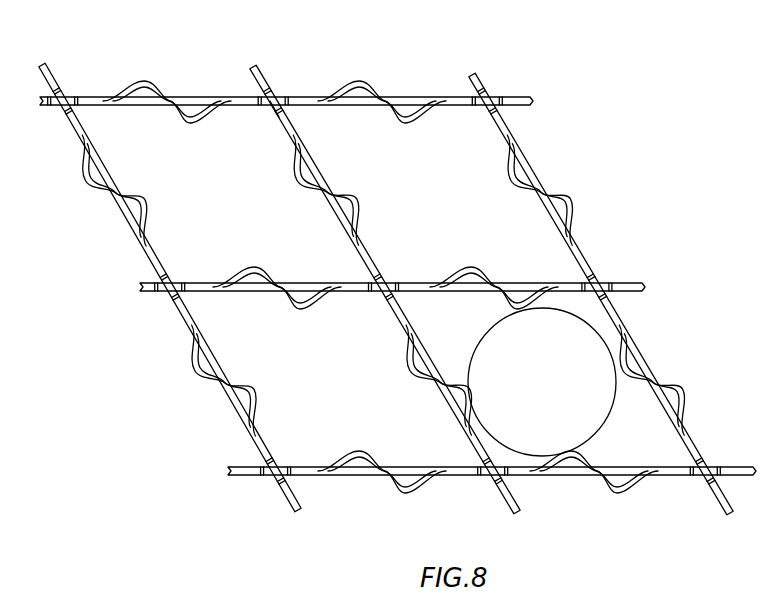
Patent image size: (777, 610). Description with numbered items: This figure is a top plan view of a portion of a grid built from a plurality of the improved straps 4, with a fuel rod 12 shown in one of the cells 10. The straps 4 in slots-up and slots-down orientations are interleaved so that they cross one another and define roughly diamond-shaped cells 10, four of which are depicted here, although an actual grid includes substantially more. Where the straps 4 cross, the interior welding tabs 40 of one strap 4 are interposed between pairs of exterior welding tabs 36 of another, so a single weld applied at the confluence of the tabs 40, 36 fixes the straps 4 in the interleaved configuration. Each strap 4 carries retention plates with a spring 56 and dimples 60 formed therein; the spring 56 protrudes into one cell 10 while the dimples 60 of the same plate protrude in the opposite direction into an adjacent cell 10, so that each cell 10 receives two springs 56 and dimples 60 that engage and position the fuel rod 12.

The strap 4 is at (305, 110).
The cell 10 is at (213, 204).
The fuel rod 12 is at (497, 445).
The exterior welding tab 36 is at (249, 83).
The interior welding tab 40 is at (278, 117).
The spring 56 is at (383, 152).
The first dimple 60 is at (381, 226).